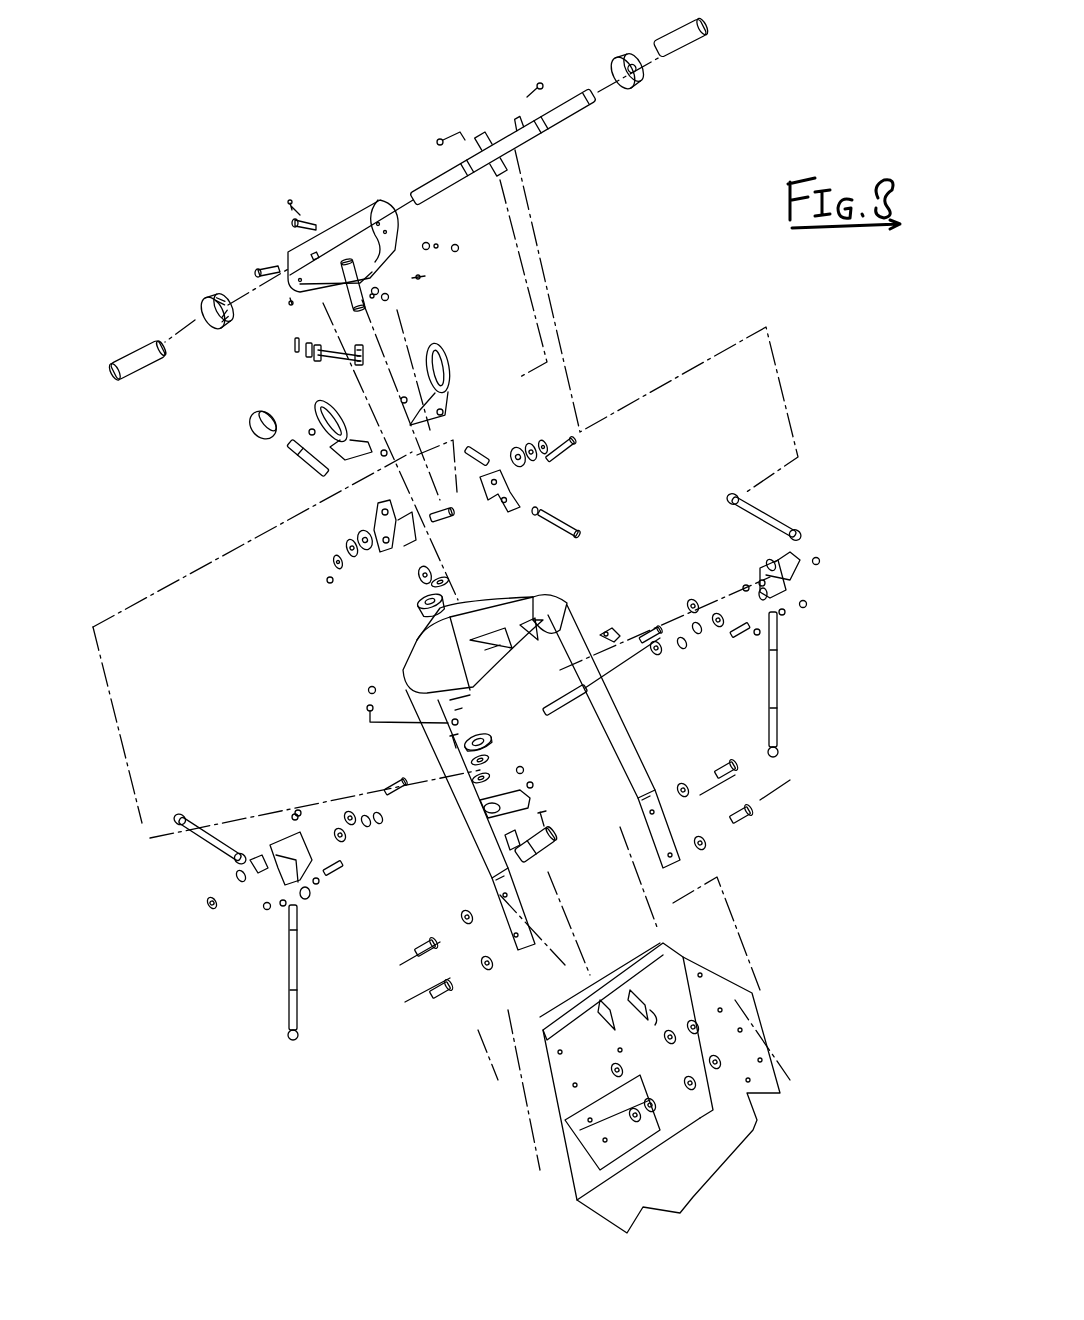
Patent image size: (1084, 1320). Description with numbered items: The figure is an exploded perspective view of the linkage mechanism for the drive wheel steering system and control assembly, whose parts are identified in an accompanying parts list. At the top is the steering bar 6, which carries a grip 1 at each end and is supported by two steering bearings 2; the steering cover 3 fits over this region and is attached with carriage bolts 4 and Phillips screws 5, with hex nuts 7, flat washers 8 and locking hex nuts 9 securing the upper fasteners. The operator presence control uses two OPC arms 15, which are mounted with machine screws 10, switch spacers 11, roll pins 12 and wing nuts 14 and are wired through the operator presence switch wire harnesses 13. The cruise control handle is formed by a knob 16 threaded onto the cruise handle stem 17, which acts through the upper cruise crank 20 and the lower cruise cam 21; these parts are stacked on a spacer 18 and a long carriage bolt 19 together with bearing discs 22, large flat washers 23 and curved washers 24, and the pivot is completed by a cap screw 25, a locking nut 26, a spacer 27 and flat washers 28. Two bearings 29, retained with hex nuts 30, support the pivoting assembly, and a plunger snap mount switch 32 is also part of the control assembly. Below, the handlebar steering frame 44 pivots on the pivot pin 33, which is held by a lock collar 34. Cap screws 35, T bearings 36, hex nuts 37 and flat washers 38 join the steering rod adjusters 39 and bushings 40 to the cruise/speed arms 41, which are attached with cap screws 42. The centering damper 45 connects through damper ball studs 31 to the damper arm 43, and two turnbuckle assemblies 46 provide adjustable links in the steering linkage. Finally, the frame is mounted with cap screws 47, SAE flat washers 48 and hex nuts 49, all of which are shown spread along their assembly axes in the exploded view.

The grip 1 is at (697, 46).
The steering bearing 2 is at (600, 66).
The steering cover 3 is at (378, 195).
The carriage bolt 4 is at (287, 220).
The Phillips screw 5 is at (285, 198).
The steering bar 6 is at (440, 170).
The hex nut 7 is at (530, 87).
The flat washer 8 is at (375, 290).
The hex locking nut 9 is at (455, 247).
The machine screw 10 is at (418, 277).
The switch spacer 11 is at (370, 352).
The roll pin 12 is at (320, 357).
The operator presence switch wire harness 13 is at (308, 353).
The wing nut 14 is at (293, 353).
The OPC arm 15 is at (455, 364).
The knob 16 is at (252, 434).
The cruise handle stem 17 is at (297, 450).
The spacer 18 is at (470, 445).
The carriage bolt 19 is at (582, 528).
The upper cruise crank 20 is at (380, 516).
The lower cruise cam 21 is at (535, 512).
The bearing disc 22 is at (520, 454).
The flat washer 23 is at (532, 452).
The curved washer 24 is at (552, 468).
The cap screw 25 is at (585, 447).
The hex locking nut 26 is at (330, 580).
The spacer 27 is at (455, 520).
The flat washer 28 is at (440, 582).
The bearing 29 is at (426, 610).
The hex nut 30 is at (803, 604).
The damper ball stud 31 is at (450, 742).
The plunger snap mount switch 32 is at (612, 632).
The pivot pin 33 is at (576, 698).
The lock collar 34 is at (656, 650).
The cap screw 35 is at (640, 640).
The T bearing 36 is at (682, 645).
The hex nut 37 is at (697, 630).
The flat washer 38 is at (693, 605).
The steering rod adjuster 39 is at (770, 512).
The bushing 40 is at (816, 561).
The cruise/speed arm 41 is at (766, 594).
The cap screw 42 is at (733, 636).
The damper arm 43 is at (500, 830).
The handlebar steering frame 44 is at (642, 767).
The centering damper 45 is at (548, 845).
The turnbuckle assembly 46 is at (778, 700).
The cap screw 47 is at (744, 808).
The flat washer 48 is at (683, 788).
The hex nut 49 is at (677, 1050).